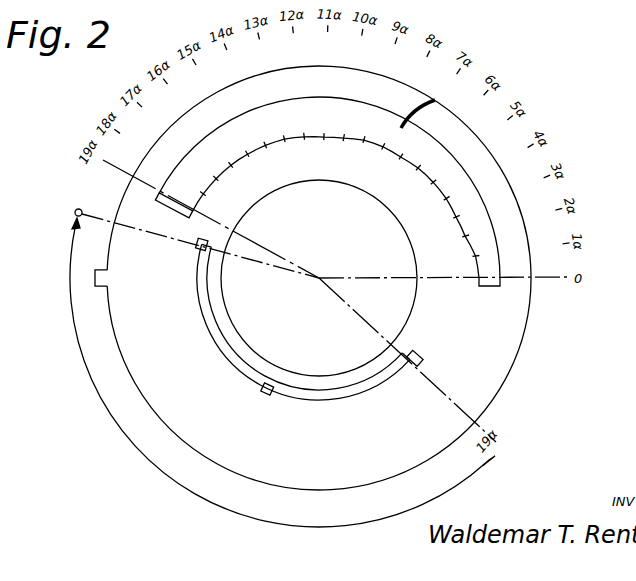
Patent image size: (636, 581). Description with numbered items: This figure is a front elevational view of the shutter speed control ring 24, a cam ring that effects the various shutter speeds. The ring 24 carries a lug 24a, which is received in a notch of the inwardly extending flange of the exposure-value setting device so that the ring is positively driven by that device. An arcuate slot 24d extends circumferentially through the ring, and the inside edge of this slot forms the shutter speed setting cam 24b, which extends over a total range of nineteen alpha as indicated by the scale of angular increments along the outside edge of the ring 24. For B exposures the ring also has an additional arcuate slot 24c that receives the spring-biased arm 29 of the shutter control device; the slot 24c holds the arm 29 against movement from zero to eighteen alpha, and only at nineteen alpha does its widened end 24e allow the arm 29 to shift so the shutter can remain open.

The shutter speed control ring 24 is at (494, 338).
The lug 24a is at (100, 283).
The shutter speed setting cam 24b is at (409, 160).
The arcuate slot 24c is at (205, 313).
The arcuate slot 24d is at (403, 128).
The widened end 24e is at (420, 356).
The arm 29 is at (263, 392).